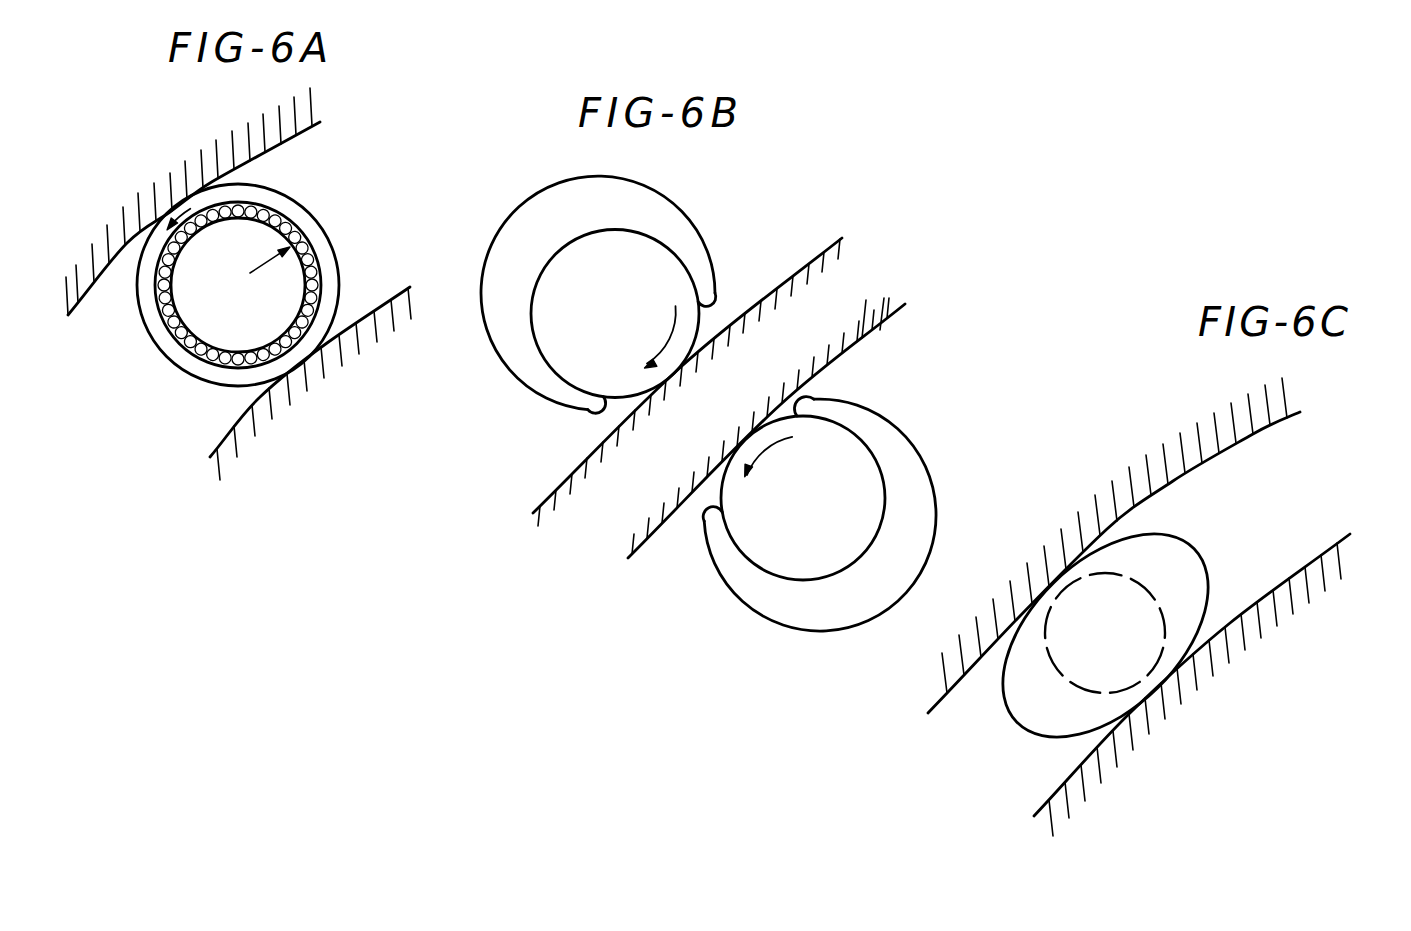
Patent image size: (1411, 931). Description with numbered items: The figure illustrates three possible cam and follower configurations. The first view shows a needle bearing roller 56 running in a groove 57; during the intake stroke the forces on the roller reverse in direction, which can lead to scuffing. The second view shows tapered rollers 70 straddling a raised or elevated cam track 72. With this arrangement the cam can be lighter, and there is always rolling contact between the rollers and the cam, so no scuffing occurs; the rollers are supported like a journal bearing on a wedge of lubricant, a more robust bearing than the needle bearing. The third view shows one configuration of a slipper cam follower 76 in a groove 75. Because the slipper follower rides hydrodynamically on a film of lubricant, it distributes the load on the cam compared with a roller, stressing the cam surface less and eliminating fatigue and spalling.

In FIG. 6A, the needle bearing roller 56 is at (343, 269).
In FIG. 6A, the groove 57 is at (283, 135).
In FIG. 6B, the tapered rollers 70 is at (724, 233).
In FIG. 6B, the raised cam track 72 is at (903, 308).
In FIG. 6C, the groove 75 is at (1252, 433).
In FIG. 6C, the slipper cam follower 76 is at (1200, 548).